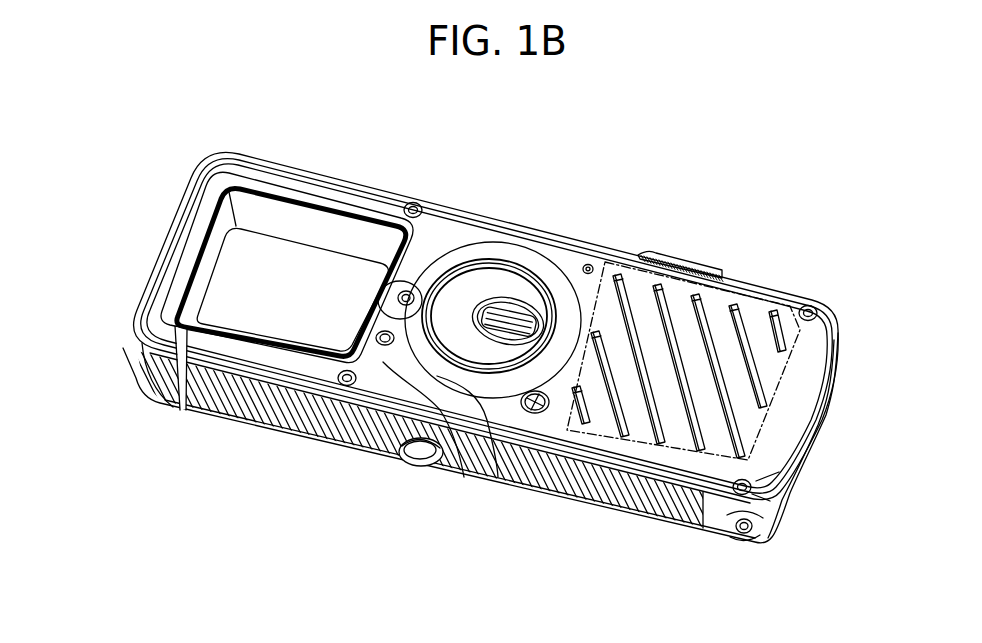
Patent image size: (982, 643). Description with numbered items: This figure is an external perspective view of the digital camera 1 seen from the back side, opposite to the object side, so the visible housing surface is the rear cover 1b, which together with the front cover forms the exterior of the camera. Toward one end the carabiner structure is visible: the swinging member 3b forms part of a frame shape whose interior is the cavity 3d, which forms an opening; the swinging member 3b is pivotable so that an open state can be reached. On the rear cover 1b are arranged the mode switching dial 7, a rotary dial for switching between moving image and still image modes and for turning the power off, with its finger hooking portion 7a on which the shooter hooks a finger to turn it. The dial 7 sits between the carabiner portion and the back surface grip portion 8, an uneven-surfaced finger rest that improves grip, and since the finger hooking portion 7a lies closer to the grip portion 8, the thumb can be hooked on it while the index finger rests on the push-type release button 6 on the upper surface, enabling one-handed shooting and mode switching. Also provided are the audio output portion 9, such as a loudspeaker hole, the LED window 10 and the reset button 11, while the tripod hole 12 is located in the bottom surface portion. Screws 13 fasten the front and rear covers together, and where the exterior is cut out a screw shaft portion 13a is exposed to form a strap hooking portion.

The digital camera 1 is at (112, 150).
The rear cover 1b is at (273, 175).
The swinging member 3b is at (250, 365).
The cavity 3d is at (227, 303).
The release button 6 is at (686, 254).
The mode switching dial 7 is at (455, 292).
The finger hooking portion 7a is at (512, 302).
The back surface grip portion 8 is at (672, 325).
The audio output portion 9 is at (540, 412).
The LED window 10 is at (497, 415).
The reset button 11 is at (604, 262).
The tripod hole 12 is at (400, 465).
The screws 13 is at (412, 205).
The screw shaft portion 13a is at (755, 539).